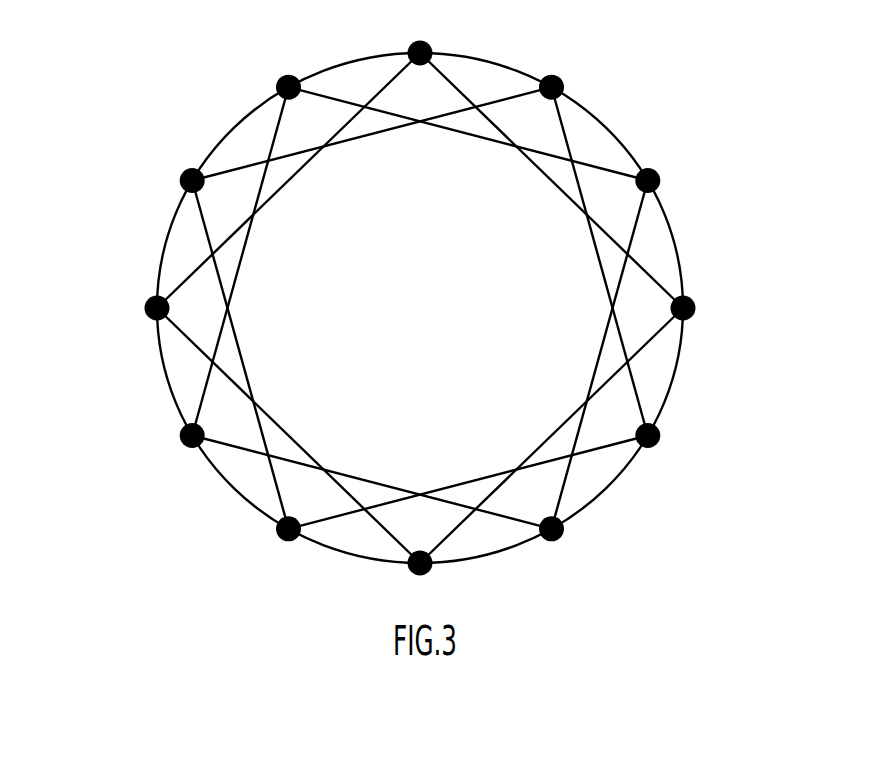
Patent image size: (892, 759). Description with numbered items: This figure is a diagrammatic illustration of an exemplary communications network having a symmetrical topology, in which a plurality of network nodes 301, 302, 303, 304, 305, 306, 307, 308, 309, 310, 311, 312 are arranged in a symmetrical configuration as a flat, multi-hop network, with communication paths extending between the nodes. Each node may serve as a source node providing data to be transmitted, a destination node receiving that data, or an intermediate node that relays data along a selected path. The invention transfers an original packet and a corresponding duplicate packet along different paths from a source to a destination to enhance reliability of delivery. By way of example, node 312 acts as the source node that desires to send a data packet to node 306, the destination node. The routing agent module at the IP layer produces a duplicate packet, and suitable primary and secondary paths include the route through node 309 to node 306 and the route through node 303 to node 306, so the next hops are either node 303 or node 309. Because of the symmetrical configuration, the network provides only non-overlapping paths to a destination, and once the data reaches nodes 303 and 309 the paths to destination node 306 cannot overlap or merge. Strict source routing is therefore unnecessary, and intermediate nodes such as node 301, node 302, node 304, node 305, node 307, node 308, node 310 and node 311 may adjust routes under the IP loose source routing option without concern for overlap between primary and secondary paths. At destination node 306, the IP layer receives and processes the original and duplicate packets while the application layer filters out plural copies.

The node 301 is at (556, 75).
The node 302 is at (656, 170).
The node 303 is at (696, 309).
The node 304 is at (659, 442).
The node 305 is at (559, 539).
The destination node 306 is at (416, 575).
The node 307 is at (287, 542).
The node 308 is at (190, 448).
The node 309 is at (144, 308).
The node 310 is at (181, 178).
The node 311 is at (279, 76).
The source node 312 is at (427, 42).